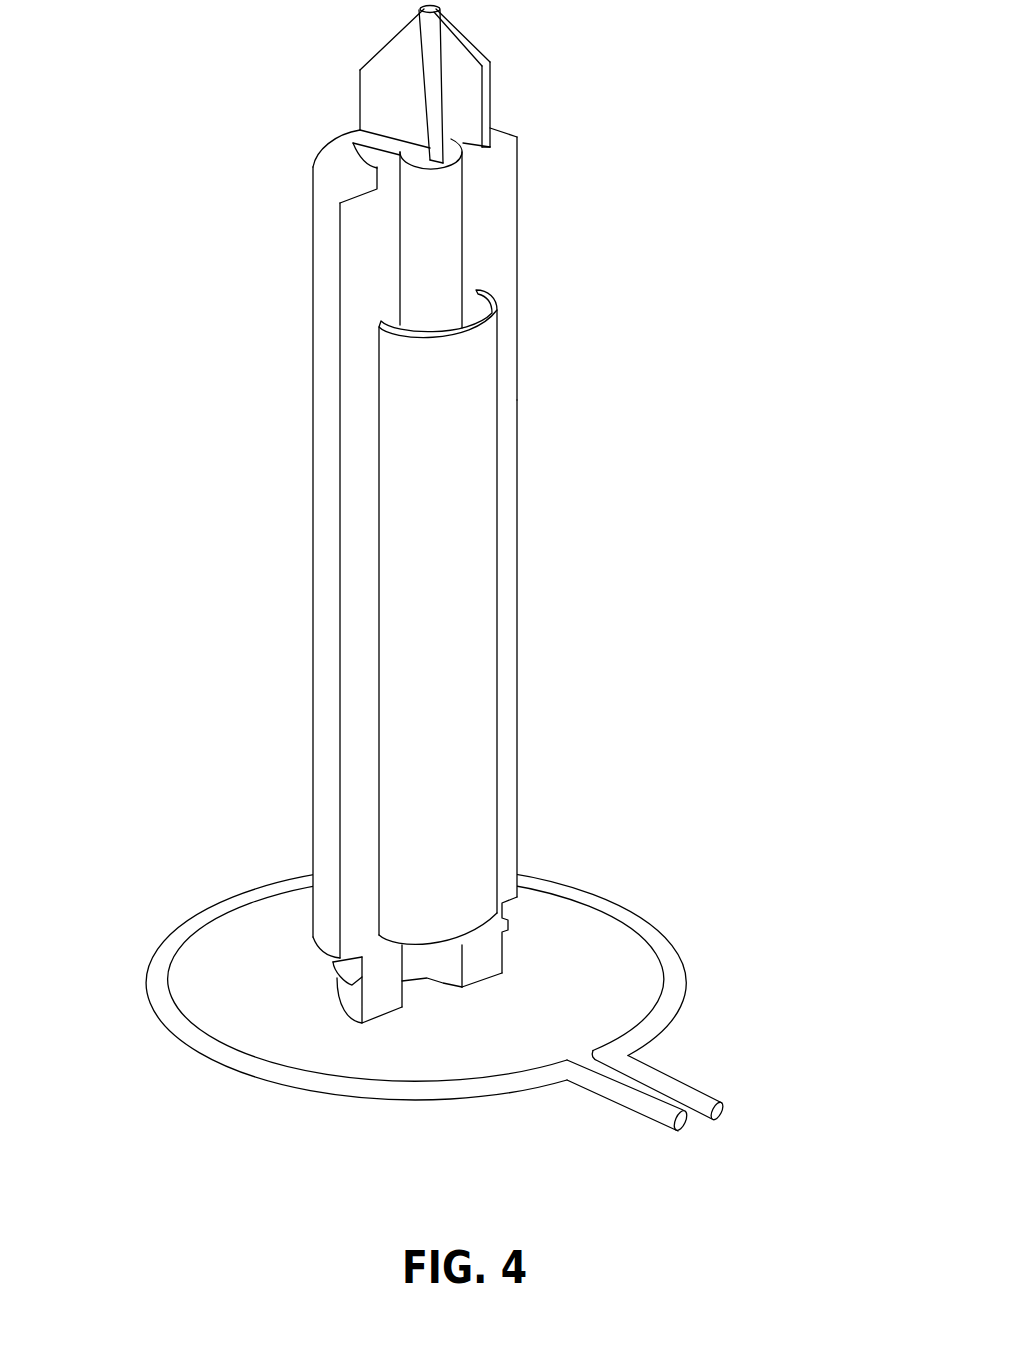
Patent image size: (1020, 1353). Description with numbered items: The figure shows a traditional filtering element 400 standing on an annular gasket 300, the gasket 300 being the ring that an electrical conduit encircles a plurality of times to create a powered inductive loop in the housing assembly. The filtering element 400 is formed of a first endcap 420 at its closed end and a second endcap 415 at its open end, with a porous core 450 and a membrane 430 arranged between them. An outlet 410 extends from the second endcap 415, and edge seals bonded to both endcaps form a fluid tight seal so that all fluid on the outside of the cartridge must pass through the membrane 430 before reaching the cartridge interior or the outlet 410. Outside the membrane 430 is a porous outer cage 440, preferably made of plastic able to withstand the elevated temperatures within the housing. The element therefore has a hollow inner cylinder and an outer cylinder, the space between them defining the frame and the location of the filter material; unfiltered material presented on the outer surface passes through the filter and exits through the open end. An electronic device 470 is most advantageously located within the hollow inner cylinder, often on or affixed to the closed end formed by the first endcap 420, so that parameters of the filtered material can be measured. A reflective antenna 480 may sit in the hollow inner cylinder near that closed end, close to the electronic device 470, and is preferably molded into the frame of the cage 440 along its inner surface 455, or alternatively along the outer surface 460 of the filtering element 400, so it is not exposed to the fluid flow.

The gasket 300 is at (313, 1090).
The filtering element 400 is at (282, 721).
The outlet 410 is at (427, 980).
The second endcap 415 is at (502, 975).
The first endcap 420 is at (443, 115).
The membrane 430 is at (358, 337).
The outer cage 440 is at (517, 190).
The porous core 450 is at (477, 410).
The inner surface 455 is at (462, 253).
The outer surface 460 is at (517, 562).
The electronic device 470 is at (427, 157).
The reflective antenna 480 is at (437, 550).